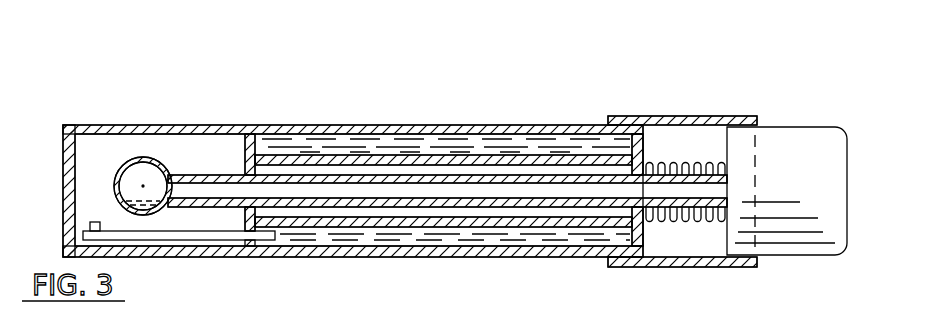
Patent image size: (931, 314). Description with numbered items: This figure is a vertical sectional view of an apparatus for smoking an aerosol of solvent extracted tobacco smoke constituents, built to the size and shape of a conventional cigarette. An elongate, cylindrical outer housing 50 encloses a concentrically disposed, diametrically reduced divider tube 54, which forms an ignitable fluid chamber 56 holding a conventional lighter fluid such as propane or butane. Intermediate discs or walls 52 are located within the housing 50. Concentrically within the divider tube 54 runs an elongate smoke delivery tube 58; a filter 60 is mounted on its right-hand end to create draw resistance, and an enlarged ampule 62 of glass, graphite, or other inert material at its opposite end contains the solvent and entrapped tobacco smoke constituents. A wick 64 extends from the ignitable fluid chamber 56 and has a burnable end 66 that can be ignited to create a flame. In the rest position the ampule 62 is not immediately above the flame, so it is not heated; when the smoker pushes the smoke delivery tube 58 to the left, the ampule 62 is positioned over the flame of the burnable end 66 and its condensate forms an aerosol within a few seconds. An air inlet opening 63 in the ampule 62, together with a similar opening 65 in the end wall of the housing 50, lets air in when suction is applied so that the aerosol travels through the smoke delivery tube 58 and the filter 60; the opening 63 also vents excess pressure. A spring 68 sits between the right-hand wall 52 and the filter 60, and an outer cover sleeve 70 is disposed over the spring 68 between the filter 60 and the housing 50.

The outer housing 50 is at (467, 125).
The intermediate disc 52 is at (243, 140).
The divider tube 54 is at (525, 155).
The ignitable fluid chamber 56 is at (410, 145).
The smoke delivery tube 58 is at (348, 190).
The filter 60 is at (800, 145).
The ampule 62 is at (170, 166).
The air inlet opening 63 is at (125, 157).
The wick 64 is at (196, 240).
The opening 65 is at (63, 143).
The burnable end 66 is at (92, 222).
The spring 68 is at (683, 220).
The outer cover sleeve 70 is at (720, 118).